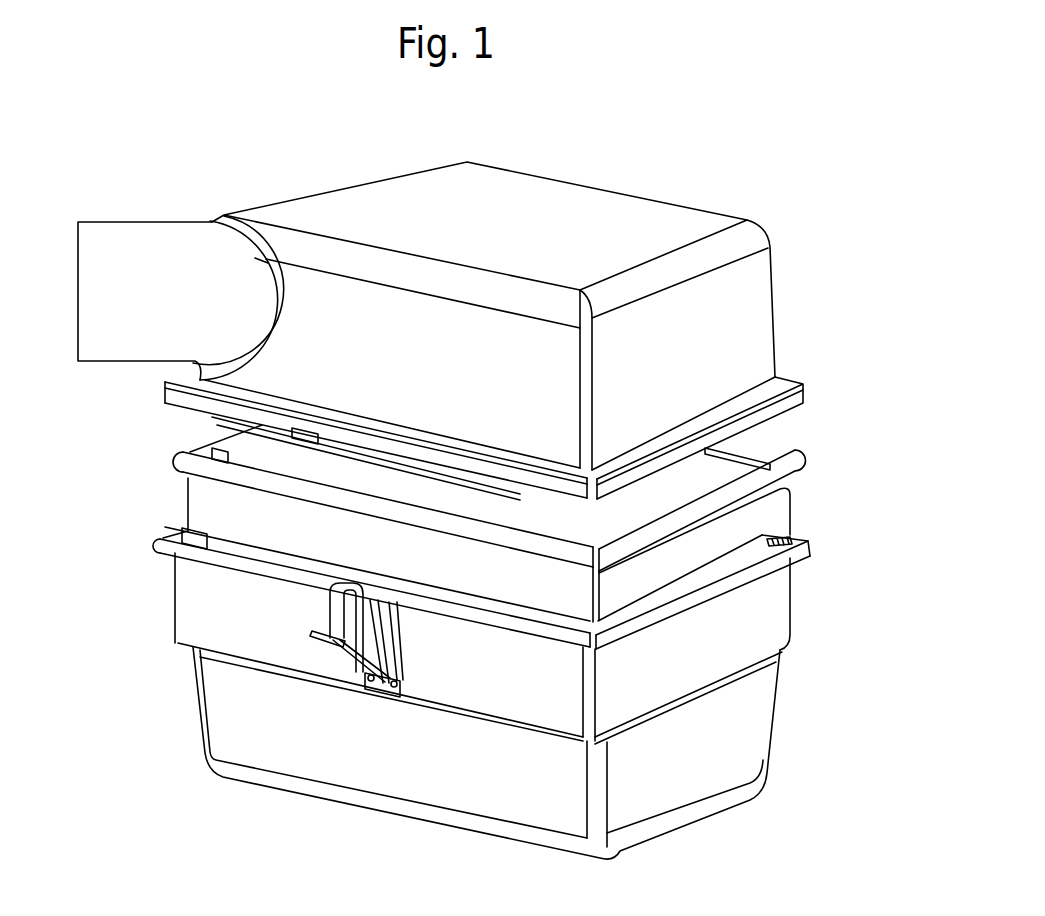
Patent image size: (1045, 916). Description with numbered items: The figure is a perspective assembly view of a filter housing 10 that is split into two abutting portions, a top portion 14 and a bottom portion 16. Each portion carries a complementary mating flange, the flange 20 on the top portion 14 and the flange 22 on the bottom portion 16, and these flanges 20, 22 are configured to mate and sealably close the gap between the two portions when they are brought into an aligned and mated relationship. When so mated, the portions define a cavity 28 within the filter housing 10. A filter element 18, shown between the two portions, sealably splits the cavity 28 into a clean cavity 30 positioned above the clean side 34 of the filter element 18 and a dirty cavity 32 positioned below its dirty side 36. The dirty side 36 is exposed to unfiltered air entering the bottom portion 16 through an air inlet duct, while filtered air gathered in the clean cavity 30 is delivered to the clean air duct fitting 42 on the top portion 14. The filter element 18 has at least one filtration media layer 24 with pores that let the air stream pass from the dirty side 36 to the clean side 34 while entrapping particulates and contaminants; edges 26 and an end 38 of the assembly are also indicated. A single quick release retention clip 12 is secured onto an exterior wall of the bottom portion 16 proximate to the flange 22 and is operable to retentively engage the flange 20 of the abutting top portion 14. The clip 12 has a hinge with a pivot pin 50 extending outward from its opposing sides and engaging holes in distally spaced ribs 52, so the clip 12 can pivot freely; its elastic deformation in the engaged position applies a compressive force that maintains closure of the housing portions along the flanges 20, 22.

The filter housing 10 is at (737, 171).
The quick release retention clip 12 is at (340, 613).
The top portion of the filter housing 14 is at (713, 364).
The bottom portion of the filter housing 16 is at (719, 757).
The filter element 18 is at (702, 494).
The mating flange of top portion 20 is at (212, 410).
The mating flange of bottom portion 22 is at (190, 533).
The filtration media layer 24 is at (187, 422).
The edge 26 is at (437, 520).
The cavity 28 is at (353, 466).
The clean cavity 30 is at (300, 467).
The dirty cavity 32 is at (735, 566).
The clean side of the filter element 34 is at (718, 478).
The dirty side of the filter element 36 is at (777, 566).
The plate end 38 is at (168, 407).
The clean air duct fitting 42 is at (166, 302).
The pivot pin 50 is at (398, 686).
The ribs 52 is at (396, 612).